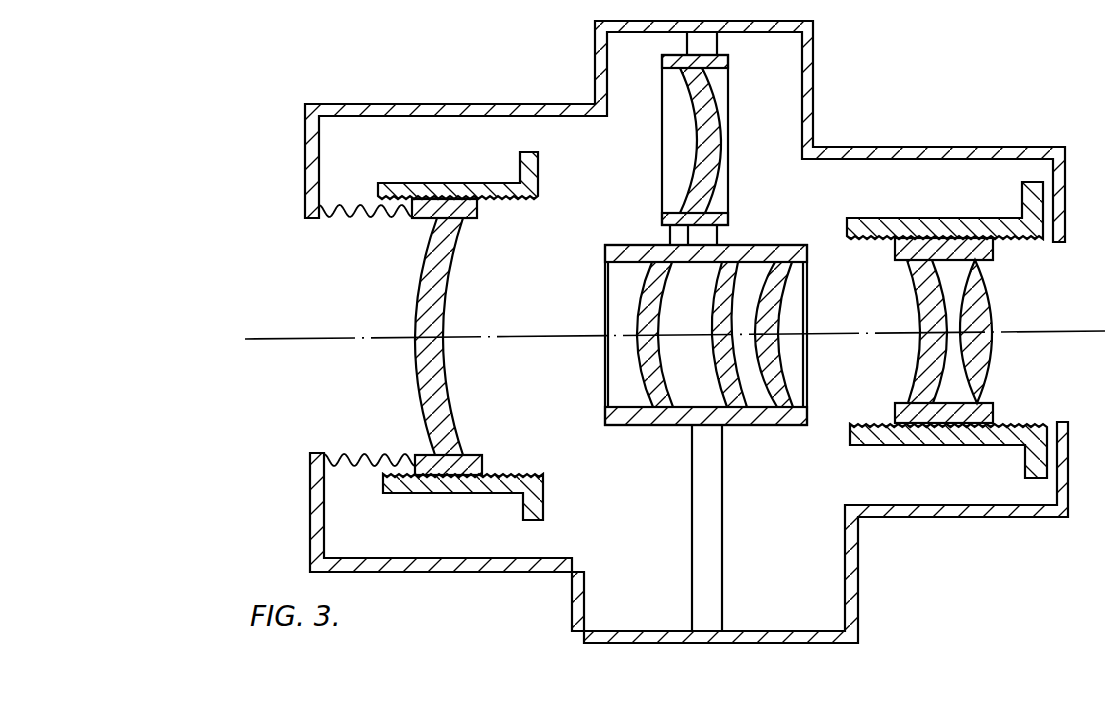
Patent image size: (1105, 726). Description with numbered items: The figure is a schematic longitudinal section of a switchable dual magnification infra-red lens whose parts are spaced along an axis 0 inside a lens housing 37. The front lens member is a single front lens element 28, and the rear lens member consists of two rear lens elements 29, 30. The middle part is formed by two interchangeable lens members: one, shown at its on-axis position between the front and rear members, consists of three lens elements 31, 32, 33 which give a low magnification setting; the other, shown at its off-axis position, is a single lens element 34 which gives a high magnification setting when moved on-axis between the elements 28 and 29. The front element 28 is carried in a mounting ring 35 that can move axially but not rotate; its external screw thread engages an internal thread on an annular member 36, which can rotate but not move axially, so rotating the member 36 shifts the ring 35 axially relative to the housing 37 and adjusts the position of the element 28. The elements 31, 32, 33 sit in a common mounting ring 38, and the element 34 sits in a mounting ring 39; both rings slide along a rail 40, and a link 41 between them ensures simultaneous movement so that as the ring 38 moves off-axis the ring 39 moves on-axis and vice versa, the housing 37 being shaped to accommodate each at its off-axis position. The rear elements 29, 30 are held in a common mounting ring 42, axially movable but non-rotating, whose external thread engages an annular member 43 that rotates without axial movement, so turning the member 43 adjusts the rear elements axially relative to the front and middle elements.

The axis 0 is at (660, 340).
The front lens element 28 is at (447, 285).
The rear lens element 29 is at (918, 296).
The rear lens element 30 is at (988, 305).
The middle lens element 31 is at (654, 348).
The middle lens element 32 is at (722, 296).
The middle lens element 33 is at (780, 326).
The middle lens element 34 is at (697, 128).
The mounting ring 35 is at (478, 206).
The annular member 36 is at (430, 190).
The lens housing 37 is at (510, 104).
The mounting ring 38 is at (632, 425).
The mounting ring 39 is at (728, 55).
The rail 40 is at (722, 487).
The link 41 is at (670, 240).
The mounting ring 42 is at (895, 250).
The annular member 43 is at (888, 218).